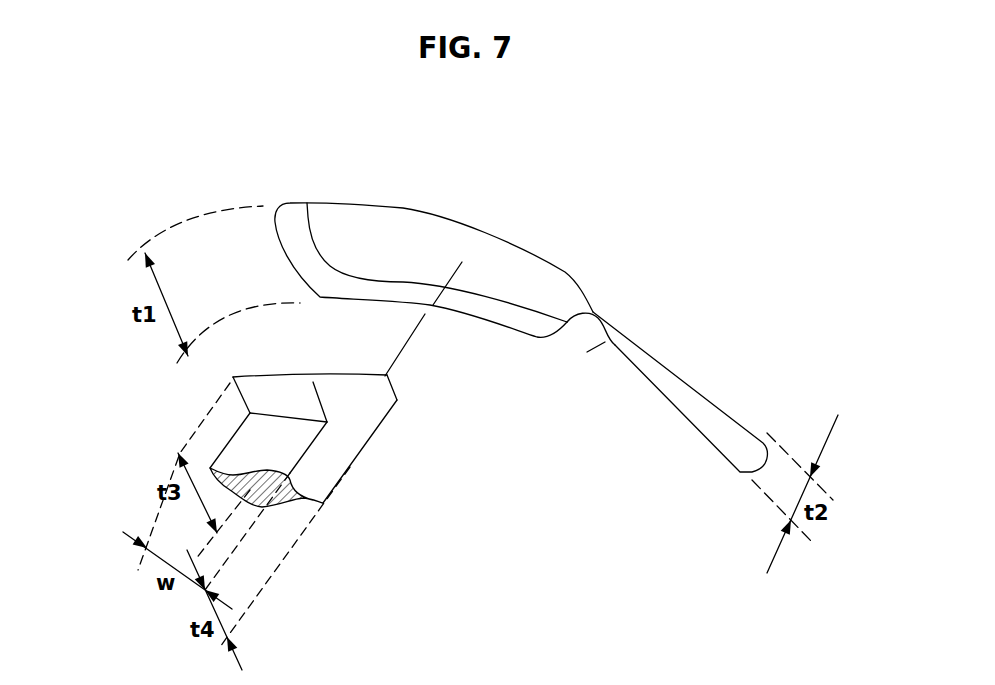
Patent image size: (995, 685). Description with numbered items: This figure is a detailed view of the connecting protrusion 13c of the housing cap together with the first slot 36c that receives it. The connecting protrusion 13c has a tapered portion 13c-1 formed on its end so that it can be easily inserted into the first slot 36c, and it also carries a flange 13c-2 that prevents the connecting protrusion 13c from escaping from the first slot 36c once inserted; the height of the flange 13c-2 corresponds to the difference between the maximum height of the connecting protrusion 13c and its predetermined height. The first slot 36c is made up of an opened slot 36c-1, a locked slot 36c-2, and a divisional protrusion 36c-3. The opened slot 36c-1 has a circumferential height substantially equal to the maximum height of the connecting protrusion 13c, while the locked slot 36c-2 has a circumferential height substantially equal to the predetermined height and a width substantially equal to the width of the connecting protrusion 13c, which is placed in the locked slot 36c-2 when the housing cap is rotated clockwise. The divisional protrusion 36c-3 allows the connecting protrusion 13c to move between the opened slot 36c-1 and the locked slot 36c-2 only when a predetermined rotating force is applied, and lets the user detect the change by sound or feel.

The first slot 36c is at (521, 299).
The opened slot 36c-1 is at (430, 232).
The locked slot 36c-2 is at (703, 387).
The divisional protrusion 36c-3 is at (563, 345).
The connecting protrusion 13c is at (252, 437).
The tapered portion 13c-1 is at (317, 373).
The flange 13c-2 is at (246, 411).